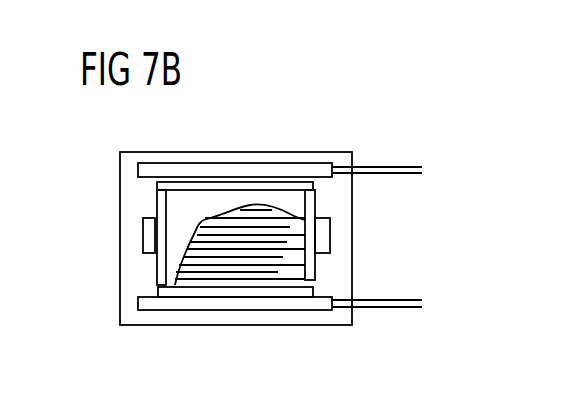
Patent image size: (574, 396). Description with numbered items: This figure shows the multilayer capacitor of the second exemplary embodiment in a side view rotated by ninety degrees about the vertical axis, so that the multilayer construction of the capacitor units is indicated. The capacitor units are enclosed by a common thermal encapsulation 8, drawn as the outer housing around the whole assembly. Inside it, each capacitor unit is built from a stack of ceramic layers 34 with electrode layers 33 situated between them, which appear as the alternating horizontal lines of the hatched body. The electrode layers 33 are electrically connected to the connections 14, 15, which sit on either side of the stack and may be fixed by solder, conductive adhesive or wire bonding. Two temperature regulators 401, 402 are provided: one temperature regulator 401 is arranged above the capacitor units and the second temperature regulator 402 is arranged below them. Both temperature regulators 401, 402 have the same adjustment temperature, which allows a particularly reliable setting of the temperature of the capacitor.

The thermal encapsulation 8 is at (343, 265).
The temperature regulator 401 is at (247, 170).
The second temperature regulator 402 is at (297, 302).
The connection 14 is at (150, 239).
The connection 15 is at (324, 236).
The electrode layers 33 is at (198, 272).
The ceramic layers 34 is at (238, 272).